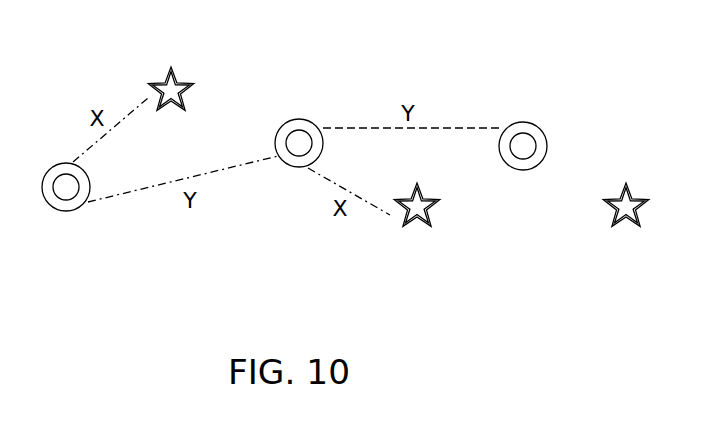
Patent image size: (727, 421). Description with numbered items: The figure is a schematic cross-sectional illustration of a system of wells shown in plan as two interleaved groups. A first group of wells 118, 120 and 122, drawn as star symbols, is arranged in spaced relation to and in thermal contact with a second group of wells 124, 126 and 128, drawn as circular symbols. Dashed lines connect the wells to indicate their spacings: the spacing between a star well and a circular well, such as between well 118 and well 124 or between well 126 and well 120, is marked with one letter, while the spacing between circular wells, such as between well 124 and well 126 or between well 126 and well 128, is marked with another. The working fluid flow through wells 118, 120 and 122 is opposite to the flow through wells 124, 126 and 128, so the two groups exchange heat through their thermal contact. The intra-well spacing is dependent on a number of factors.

The well 118 is at (185, 83).
The well 120 is at (433, 212).
The well 122 is at (638, 202).
The well 124 is at (65, 211).
The well 126 is at (298, 119).
The well 128 is at (523, 122).